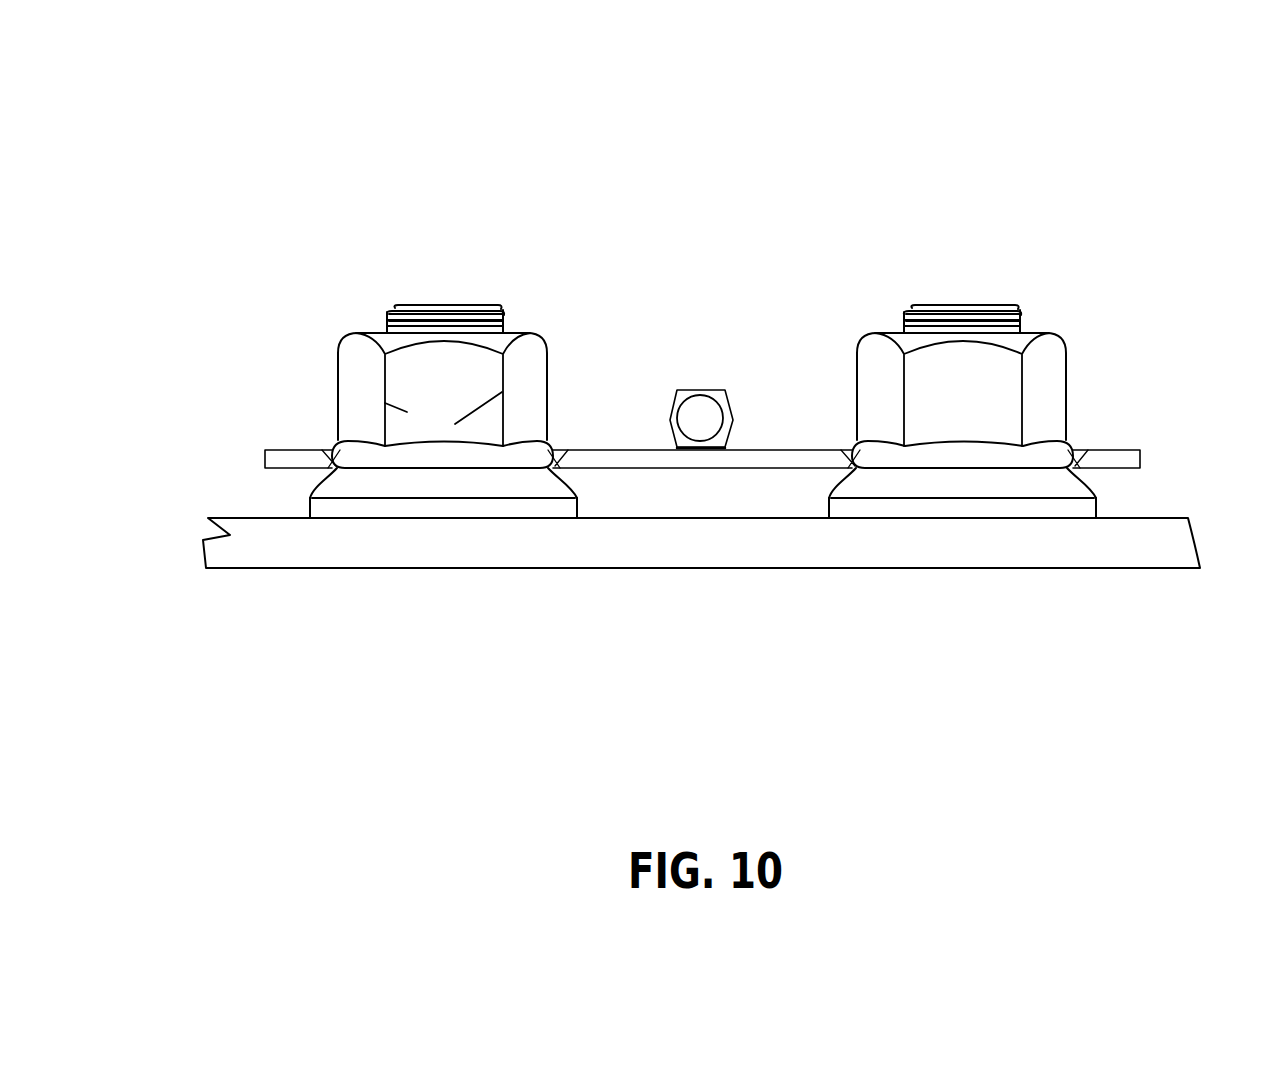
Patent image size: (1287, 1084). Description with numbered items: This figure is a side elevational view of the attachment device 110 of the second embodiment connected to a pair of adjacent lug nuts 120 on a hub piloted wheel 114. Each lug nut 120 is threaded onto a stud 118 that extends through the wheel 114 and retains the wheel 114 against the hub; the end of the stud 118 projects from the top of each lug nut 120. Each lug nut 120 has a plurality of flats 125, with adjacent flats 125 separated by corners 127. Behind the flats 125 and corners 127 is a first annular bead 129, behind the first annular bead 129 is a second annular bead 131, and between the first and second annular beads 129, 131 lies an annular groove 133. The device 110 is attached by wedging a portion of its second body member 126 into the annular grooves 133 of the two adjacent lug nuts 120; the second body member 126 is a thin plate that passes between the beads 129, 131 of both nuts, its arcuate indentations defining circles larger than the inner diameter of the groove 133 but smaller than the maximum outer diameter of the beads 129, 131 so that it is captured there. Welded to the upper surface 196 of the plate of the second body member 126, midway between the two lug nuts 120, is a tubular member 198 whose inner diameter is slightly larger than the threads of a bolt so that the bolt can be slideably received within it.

The device 110 is at (738, 317).
The wheel 114 is at (1172, 507).
The stud 118 is at (398, 302).
The lug nut 120 is at (335, 353).
The flat 125 is at (523, 357).
The second body member 126 is at (578, 450).
The corner 127 is at (407, 412).
The first annular bead 129 is at (332, 440).
The second annular bead 131 is at (305, 492).
The annular groove 133 is at (470, 472).
The upper surface 196 is at (640, 473).
The tubular member 198 is at (695, 382).